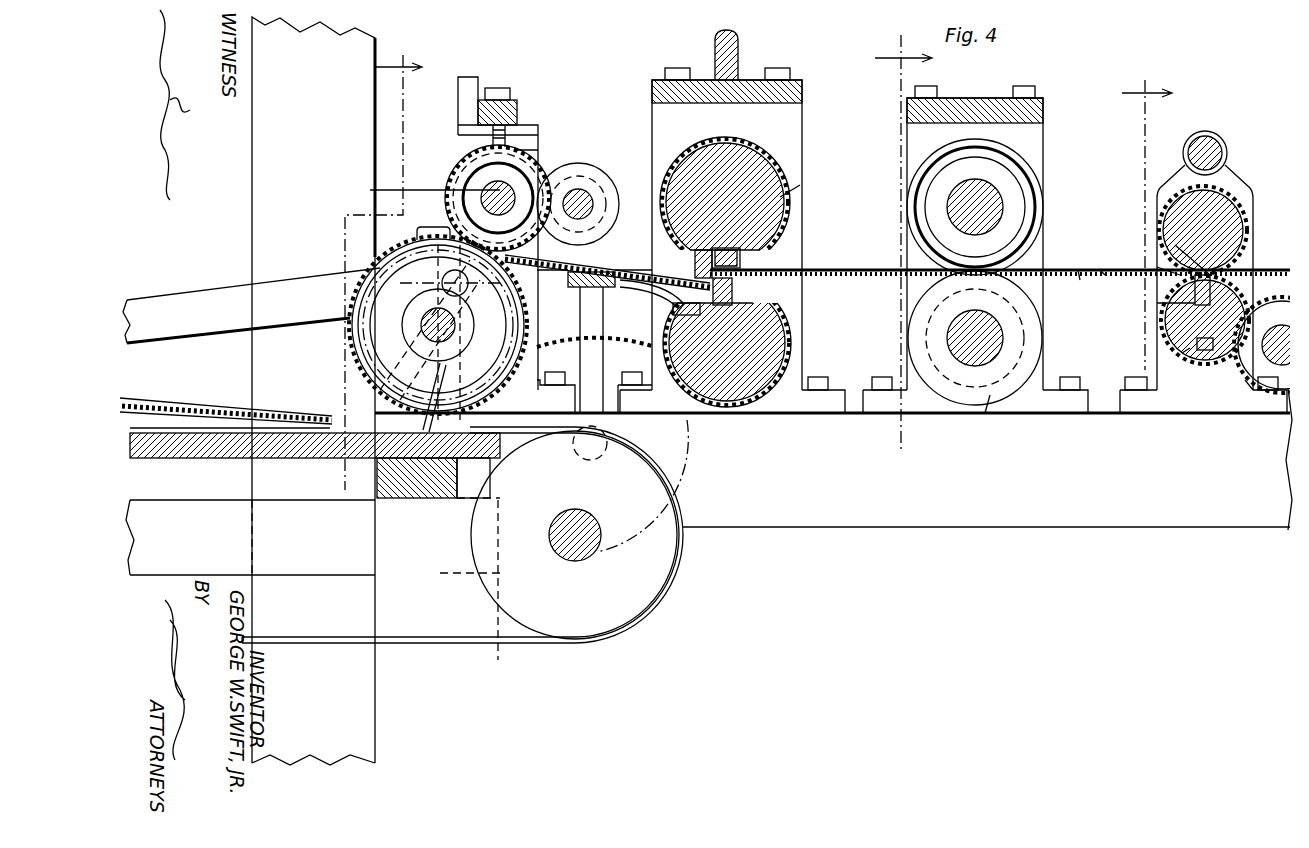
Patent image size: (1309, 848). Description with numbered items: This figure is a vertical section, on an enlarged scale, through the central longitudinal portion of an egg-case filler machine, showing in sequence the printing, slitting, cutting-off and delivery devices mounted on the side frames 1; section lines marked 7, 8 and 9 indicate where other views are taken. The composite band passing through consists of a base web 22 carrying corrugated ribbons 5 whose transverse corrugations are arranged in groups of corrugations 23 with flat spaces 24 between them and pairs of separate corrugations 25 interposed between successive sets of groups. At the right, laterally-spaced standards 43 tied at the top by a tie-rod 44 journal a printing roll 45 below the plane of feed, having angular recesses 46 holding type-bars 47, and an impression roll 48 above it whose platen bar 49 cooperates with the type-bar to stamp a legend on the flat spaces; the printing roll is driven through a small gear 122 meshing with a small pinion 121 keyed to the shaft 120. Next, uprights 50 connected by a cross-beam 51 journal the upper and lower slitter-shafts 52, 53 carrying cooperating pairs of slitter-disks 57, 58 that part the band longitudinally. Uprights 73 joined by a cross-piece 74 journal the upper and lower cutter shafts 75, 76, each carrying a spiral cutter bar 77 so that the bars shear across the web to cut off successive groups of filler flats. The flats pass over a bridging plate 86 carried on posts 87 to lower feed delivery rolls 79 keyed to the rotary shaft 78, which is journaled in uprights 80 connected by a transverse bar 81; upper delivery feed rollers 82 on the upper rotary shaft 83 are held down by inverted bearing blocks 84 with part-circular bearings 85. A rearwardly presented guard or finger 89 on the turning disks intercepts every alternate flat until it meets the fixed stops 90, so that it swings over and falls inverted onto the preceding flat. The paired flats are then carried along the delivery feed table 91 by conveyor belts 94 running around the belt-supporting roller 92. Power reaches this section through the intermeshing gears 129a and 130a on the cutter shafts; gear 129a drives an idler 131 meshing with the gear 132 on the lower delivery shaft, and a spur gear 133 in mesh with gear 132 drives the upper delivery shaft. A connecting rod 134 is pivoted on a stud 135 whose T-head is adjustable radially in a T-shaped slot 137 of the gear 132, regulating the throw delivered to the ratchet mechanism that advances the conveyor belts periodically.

The side frames 1 is at (709, 524).
The corrugated ribbon 5 is at (1102, 275).
The section line 7- 7 is at (1147, 212).
The section line 8- 8 is at (903, 246).
The section line 9- 9 is at (380, 262).
The base web 22 is at (1080, 270).
The groups of corrugations 23 is at (235, 408).
The flat spaces 24 is at (322, 416).
The separate corrugations 25 is at (155, 430).
The standards 43 is at (1228, 163).
The tie-rod 44 is at (1205, 133).
The printing roll 45 is at (1218, 363).
The angular recesses 46 is at (1160, 318).
The type-bar 47 is at (1157, 270).
The impression roll 48 is at (1240, 203).
The platen bar 49 is at (1160, 236).
The uprights 50 is at (1044, 133).
The cross-beam 51 is at (970, 98).
The upper slitter-shaft 52 is at (950, 198).
The lower slitter-shaft 53 is at (948, 338).
The upper slitter-disk 57 is at (1040, 188).
The lower slitter-disk 58 is at (993, 408).
The uprights 73 is at (803, 116).
The cross-piece 74 is at (742, 80).
The upper cutter shaft 75 is at (695, 163).
The lower cutter shaft 76 is at (755, 398).
The spiral cutter bar 77 is at (768, 178).
The rotary shaft 78 is at (455, 330).
The lower feed delivery rolls 79 is at (355, 340).
The uprights 80 is at (540, 138).
The transverse bar 81 is at (515, 100).
The upper delivery feed rollers 82 is at (455, 170).
The upper rotary shaft 83 is at (560, 156).
The inverted bearing blocks 84 is at (490, 125).
The part-circular bearings 85 is at (575, 222).
The bridging plate 86 is at (638, 288).
The posts 87 is at (600, 403).
The guard or finger 89 is at (430, 227).
The fixed stops 90 is at (490, 390).
The delivery feed table 91 is at (232, 447).
The belt-supporting roller 92 is at (575, 535).
The conveyor belts 94 is at (338, 646).
The shaft 120 is at (1280, 388).
The small pinion 121 is at (1248, 383).
The small gear 122 is at (1182, 353).
The gear 129a is at (725, 418).
The gear 130a is at (802, 185).
The idler 131 is at (695, 438).
The gear 132 is at (540, 343).
The spur gear 133 is at (400, 190).
The connecting rod 134 is at (251, 305).
The stud 135 is at (442, 283).
The T-shaped slot 137 is at (402, 324).